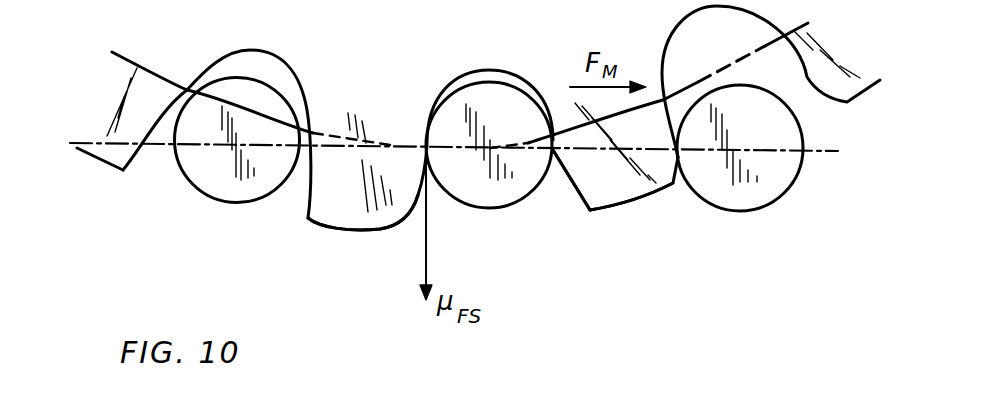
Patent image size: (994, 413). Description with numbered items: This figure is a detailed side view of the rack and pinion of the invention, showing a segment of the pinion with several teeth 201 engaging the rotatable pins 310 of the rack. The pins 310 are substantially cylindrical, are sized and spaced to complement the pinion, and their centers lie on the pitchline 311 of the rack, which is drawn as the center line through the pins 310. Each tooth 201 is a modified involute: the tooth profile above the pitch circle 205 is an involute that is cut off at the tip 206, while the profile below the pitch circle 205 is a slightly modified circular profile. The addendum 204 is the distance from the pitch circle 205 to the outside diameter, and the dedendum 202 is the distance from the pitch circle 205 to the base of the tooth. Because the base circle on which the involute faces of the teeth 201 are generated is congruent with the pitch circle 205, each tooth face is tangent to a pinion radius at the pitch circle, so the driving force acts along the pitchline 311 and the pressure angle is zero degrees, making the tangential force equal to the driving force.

The teeth 201 is at (335, 232).
The dedendum 202 is at (482, 68).
The addendum 204 is at (577, 198).
The pitch circle 205 is at (317, 130).
The tip 206 is at (376, 232).
The rotatable pins 310 is at (208, 188).
The pitchline 311 is at (813, 152).